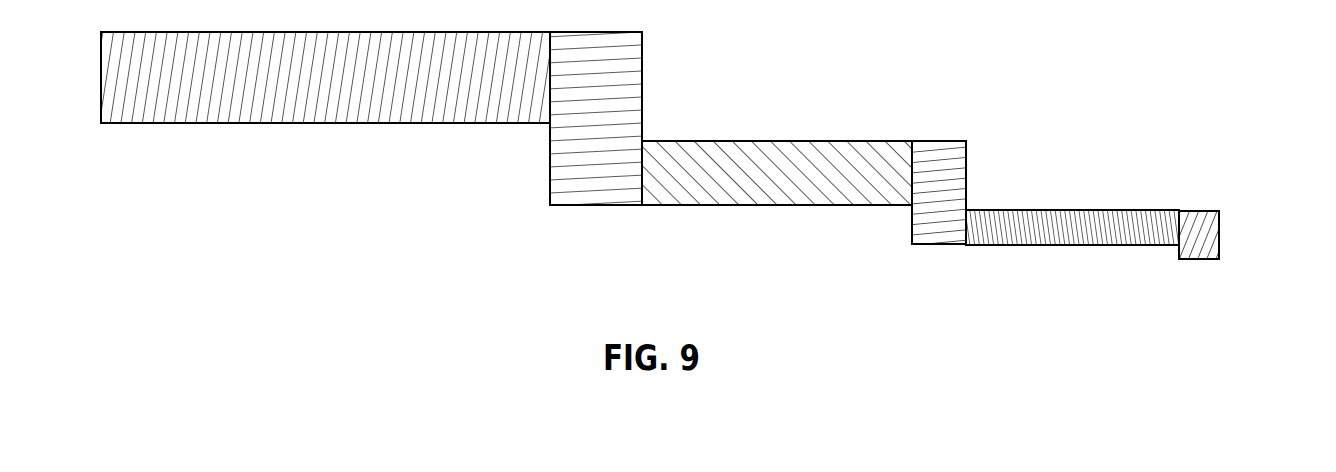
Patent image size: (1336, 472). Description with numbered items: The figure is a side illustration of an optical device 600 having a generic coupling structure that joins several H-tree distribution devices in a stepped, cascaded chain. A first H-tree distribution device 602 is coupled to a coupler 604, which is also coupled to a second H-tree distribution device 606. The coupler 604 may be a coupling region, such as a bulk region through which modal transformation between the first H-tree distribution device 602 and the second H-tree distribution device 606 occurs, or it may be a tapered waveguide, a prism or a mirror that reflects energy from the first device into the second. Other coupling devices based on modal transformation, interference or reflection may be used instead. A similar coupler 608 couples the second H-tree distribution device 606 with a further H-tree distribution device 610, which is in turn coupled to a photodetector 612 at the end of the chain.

The optical device 600 is at (893, 86).
The first H-tree distribution device 602 is at (172, 123).
The coupler 604 is at (563, 205).
The second H-tree distribution device 606 is at (775, 205).
The coupler 608 is at (966, 163).
The H-tree distribution device 610 is at (1082, 245).
The photodetector 612 is at (1219, 222).